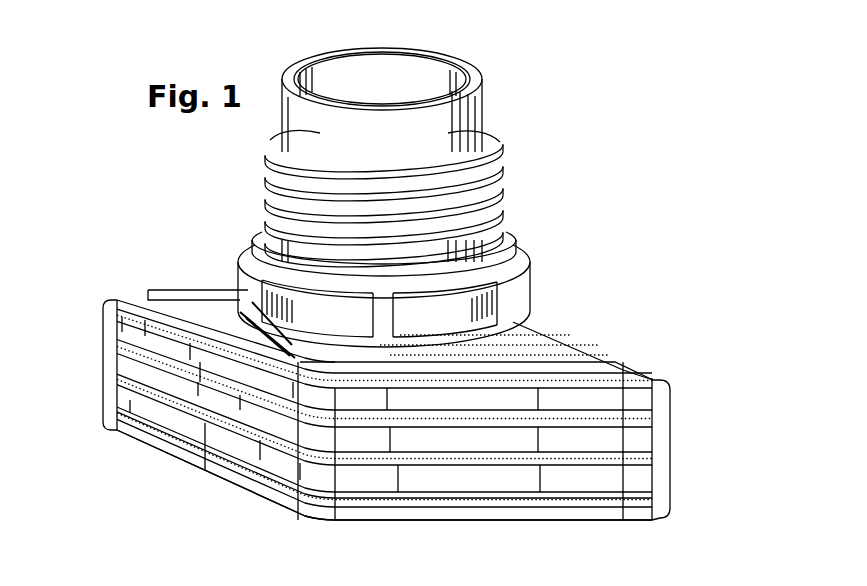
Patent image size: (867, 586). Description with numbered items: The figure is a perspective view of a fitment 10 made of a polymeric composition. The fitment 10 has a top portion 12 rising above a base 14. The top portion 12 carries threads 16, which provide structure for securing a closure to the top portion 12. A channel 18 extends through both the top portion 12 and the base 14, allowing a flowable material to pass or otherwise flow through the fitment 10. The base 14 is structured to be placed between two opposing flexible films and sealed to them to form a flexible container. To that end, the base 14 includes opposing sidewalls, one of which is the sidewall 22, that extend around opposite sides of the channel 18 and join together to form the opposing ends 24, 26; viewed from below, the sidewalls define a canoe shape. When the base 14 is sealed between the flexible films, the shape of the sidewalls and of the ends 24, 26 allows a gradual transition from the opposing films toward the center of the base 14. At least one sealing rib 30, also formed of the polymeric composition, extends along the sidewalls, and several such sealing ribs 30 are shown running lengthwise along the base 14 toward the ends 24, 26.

The fitment 10 is at (545, 56).
The top portion 12 is at (532, 160).
The base 14 is at (652, 330).
The threads 16 is at (263, 157).
The channel 18 is at (410, 64).
The sidewall 22 is at (193, 290).
The end 24 is at (78, 395).
The end 26 is at (698, 458).
The sealing rib 30 is at (548, 382).